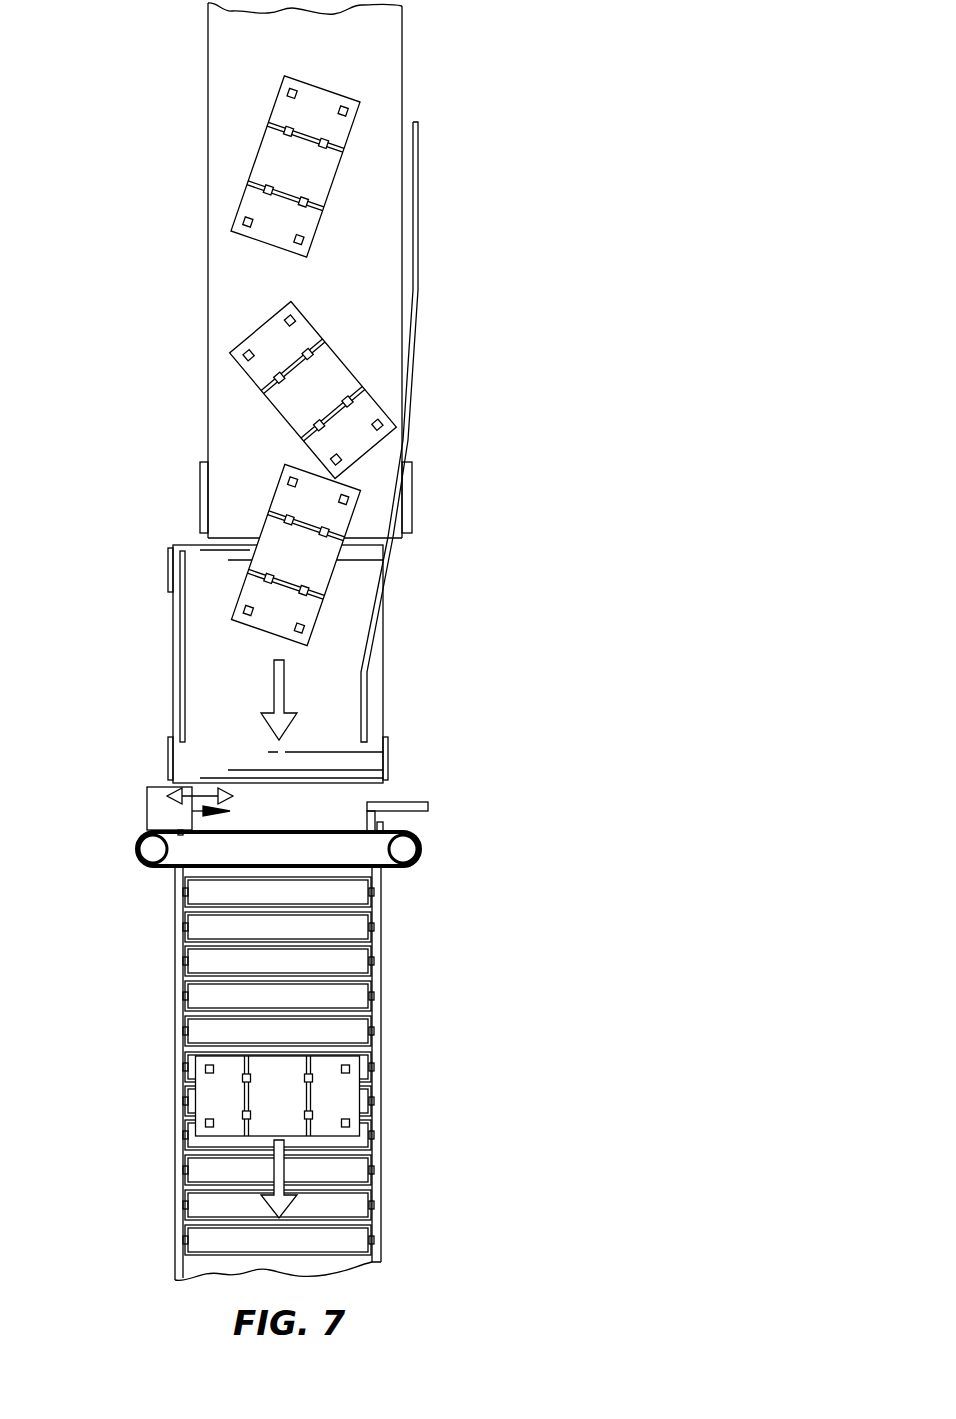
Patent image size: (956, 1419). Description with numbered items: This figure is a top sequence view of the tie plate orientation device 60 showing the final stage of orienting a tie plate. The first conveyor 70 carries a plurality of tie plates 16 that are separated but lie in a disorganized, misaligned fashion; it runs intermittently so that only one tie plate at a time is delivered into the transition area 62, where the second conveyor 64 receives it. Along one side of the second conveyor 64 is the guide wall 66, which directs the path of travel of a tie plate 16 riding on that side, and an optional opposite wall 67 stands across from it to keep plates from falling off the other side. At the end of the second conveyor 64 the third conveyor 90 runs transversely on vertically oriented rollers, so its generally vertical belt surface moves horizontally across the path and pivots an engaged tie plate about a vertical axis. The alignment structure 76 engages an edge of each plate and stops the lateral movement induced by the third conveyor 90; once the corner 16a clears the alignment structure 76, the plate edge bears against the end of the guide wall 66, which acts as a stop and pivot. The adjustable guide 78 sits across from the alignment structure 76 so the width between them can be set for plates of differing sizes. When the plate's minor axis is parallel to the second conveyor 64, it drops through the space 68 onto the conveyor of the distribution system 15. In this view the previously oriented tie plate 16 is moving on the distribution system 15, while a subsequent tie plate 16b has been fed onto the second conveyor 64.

The distribution system 15 is at (428, 1060).
The tie plate 16 is at (333, 147).
The corner of the tie plate 16a is at (252, 597).
The subsequent tie plate 16b is at (216, 1100).
The tie plate orientation device 60 is at (591, 420).
The transition area 62 is at (505, 603).
The second conveyor 64 is at (405, 690).
The guide wall 66 is at (383, 613).
The opposite wall 67 is at (183, 690).
The space 68 is at (200, 811).
The conveyor 70 is at (473, 228).
The alignment structure 76 is at (434, 803).
The guide 78 is at (162, 817).
The third conveyor 90 is at (440, 847).